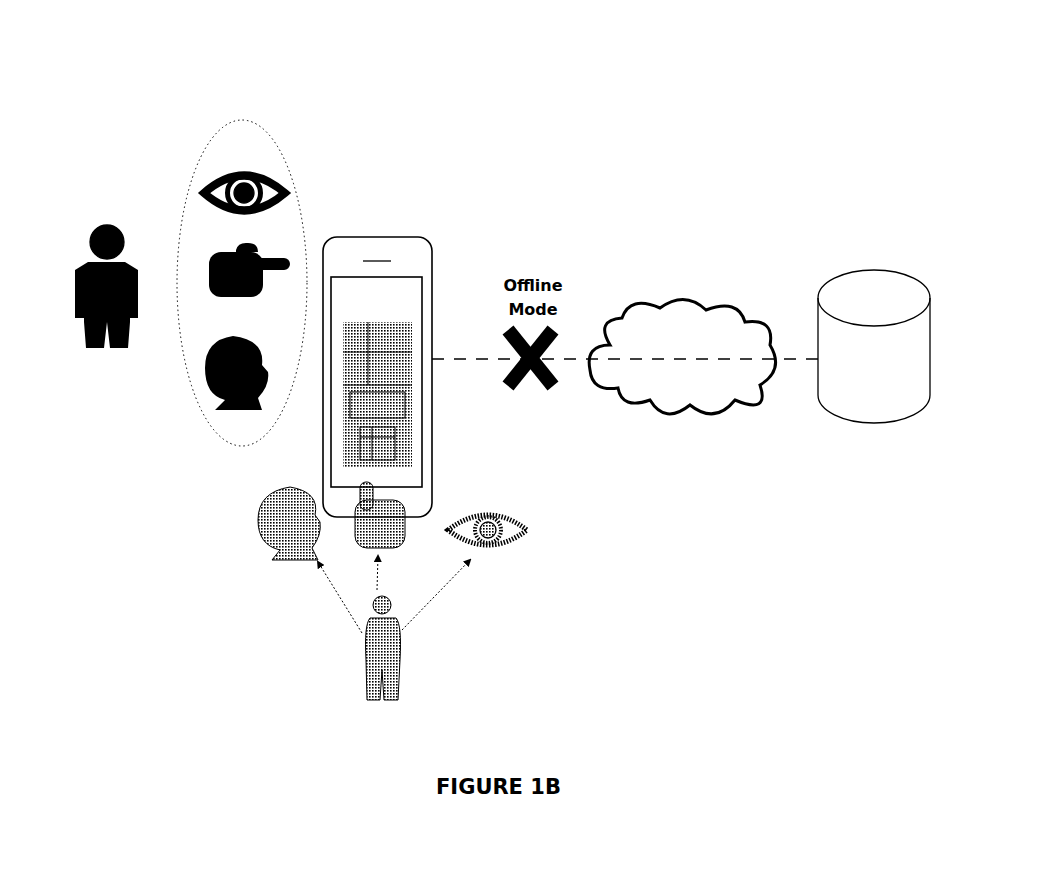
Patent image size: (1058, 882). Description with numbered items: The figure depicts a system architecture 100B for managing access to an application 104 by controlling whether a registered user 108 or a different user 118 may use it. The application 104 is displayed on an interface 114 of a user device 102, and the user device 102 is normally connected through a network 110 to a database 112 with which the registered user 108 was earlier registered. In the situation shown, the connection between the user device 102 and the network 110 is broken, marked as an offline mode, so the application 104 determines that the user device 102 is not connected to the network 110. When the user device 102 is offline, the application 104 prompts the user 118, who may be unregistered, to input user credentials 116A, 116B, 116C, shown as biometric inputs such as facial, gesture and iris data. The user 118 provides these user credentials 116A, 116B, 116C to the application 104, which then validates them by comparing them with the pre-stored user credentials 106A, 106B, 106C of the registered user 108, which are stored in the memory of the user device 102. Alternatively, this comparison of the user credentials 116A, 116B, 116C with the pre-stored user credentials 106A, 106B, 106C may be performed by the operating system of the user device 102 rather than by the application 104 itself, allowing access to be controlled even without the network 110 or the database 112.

The system architecture 100B is at (503, 80).
The user device 102 is at (373, 233).
The application 104 is at (392, 322).
The user credential 106A is at (225, 338).
The user credential 106B is at (208, 255).
The user credential 106C is at (212, 173).
The registered user 108 is at (108, 226).
The network 110 is at (652, 300).
The database 112 is at (880, 263).
The interface 114 is at (395, 275).
The user credential 116A is at (258, 514).
The user credential 116B is at (370, 481).
The user credential 116C is at (503, 510).
The different user 118 is at (403, 642).